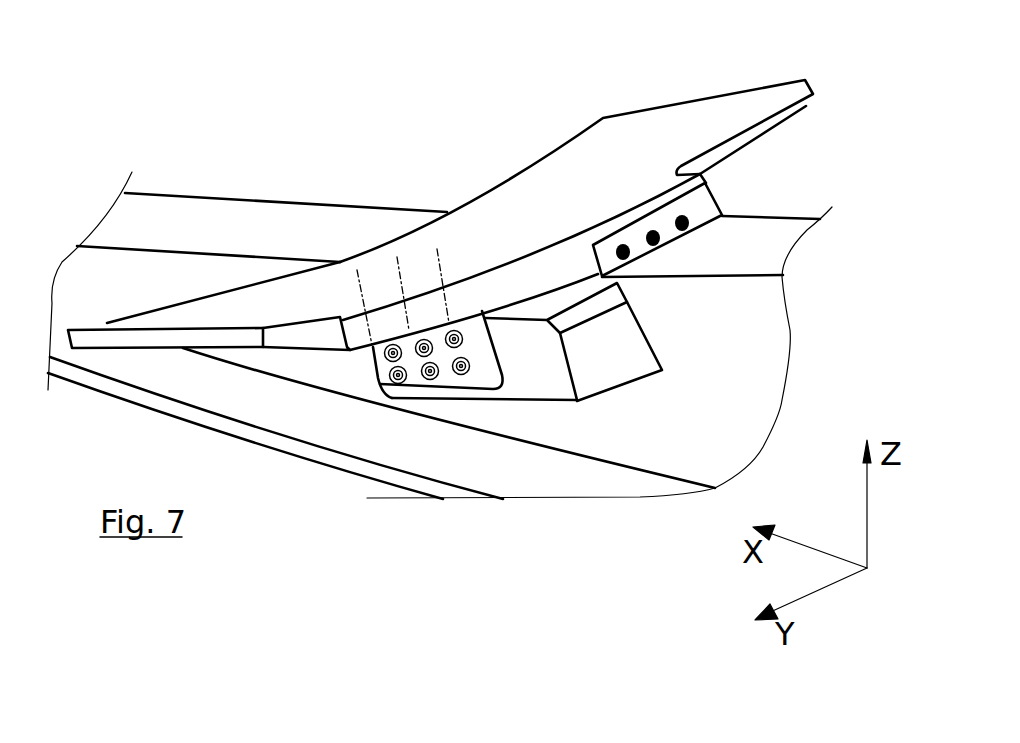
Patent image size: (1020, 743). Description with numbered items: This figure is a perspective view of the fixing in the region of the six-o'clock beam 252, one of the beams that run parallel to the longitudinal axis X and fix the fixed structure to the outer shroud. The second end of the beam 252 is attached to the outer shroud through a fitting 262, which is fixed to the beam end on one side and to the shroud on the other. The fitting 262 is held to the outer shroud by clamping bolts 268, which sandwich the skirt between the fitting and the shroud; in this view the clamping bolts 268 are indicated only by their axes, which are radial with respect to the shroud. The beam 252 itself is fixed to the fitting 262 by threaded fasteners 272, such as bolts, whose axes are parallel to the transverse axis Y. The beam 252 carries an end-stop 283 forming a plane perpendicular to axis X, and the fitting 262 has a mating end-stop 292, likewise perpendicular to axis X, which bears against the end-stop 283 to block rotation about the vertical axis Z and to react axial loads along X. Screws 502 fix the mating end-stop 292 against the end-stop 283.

The 6-o'clock beam 252 is at (68, 364).
The fitting 262 is at (702, 125).
The clamping bolts 268 is at (397, 272).
The threaded fasteners 272 is at (392, 378).
The end-stop 283 is at (700, 213).
The mating end-stop 292 is at (627, 226).
The screws 502 is at (688, 225).